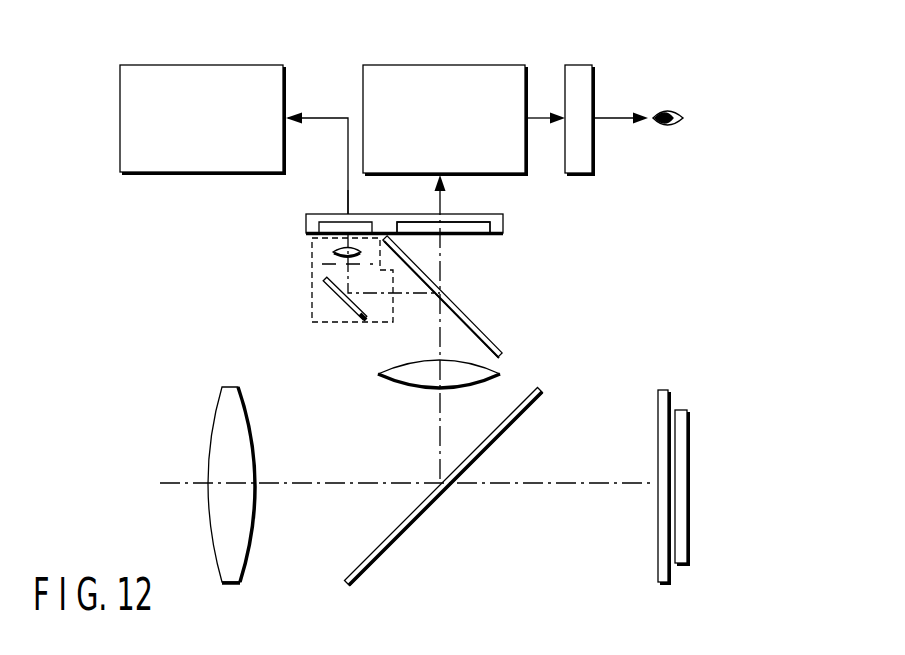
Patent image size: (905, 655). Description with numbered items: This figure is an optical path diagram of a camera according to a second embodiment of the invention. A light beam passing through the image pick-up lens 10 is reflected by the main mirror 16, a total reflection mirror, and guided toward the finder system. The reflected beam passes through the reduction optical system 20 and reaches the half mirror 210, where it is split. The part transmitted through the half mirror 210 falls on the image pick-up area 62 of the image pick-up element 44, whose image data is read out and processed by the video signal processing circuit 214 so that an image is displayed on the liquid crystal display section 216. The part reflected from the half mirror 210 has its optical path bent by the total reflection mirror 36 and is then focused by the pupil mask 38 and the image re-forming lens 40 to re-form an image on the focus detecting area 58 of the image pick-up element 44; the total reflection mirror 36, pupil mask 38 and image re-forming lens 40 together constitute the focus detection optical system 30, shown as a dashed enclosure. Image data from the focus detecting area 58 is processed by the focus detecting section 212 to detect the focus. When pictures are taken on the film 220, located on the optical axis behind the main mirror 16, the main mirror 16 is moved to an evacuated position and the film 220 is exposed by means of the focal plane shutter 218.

The image pick-up lens 10 is at (227, 583).
The main mirror 16 is at (540, 388).
The reduction optical system 20 is at (500, 371).
The focus detection optical system 30 is at (337, 323).
The total reflection mirror 36 is at (338, 293).
The pupil mask 38 is at (328, 265).
The image re-forming lens 40 is at (333, 252).
The image pick-up element 44 is at (505, 216).
The focus detecting area 58 is at (319, 213).
The image pick-up area 62 is at (463, 233).
The half mirror 210 is at (496, 347).
The focus detecting section 212 is at (205, 64).
The video signal processing circuit 214 is at (440, 64).
The liquid crystal display section 216 is at (598, 64).
The focal plane shutter 218 is at (657, 578).
The film 220 is at (688, 515).